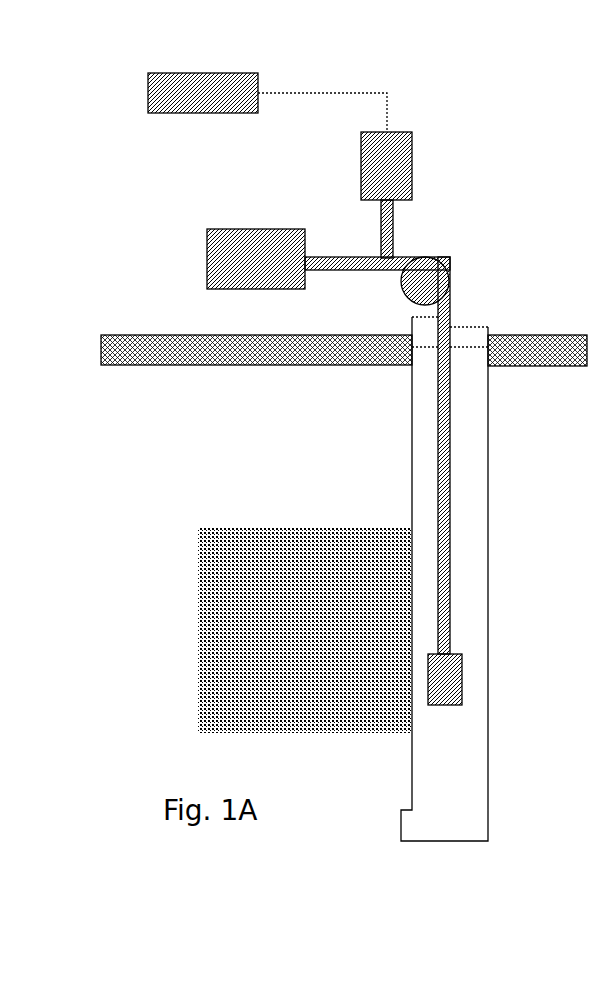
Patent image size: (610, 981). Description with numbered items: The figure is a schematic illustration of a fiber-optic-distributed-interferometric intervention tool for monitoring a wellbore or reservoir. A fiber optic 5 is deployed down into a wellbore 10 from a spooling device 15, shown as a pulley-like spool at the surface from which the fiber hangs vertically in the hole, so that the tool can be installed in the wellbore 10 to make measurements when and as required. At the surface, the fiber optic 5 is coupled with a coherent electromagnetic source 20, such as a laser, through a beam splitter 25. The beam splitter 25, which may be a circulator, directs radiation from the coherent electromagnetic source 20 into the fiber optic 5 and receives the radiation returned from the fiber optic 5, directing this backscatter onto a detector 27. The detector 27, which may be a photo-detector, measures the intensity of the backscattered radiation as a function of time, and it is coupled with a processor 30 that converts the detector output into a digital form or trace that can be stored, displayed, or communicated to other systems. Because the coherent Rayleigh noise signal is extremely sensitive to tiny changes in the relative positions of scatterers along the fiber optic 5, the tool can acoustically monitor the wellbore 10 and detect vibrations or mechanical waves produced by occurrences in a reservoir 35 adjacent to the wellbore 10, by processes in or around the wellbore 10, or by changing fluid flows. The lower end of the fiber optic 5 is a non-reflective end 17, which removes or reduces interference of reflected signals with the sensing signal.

The fiber optic 5 is at (438, 472).
The wellbore 10 is at (461, 762).
The spooling device 15 is at (403, 295).
The non-reflective end 17 is at (462, 685).
The coherent electromagnetic source 20 is at (255, 229).
The beam splitter 25 is at (395, 278).
The detector 27 is at (412, 160).
The processor 30 is at (148, 93).
The reservoir 35 is at (311, 635).